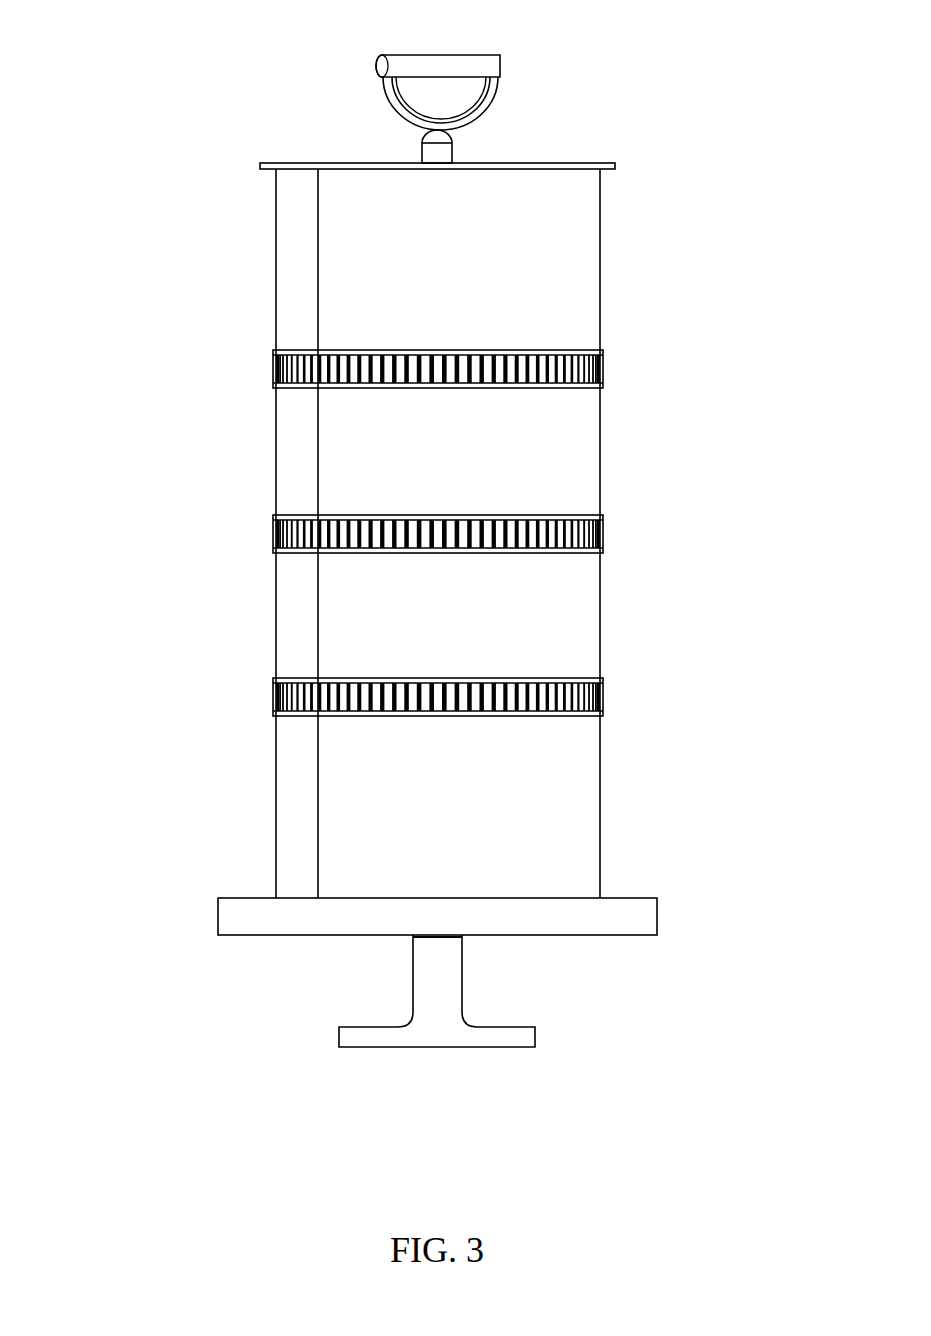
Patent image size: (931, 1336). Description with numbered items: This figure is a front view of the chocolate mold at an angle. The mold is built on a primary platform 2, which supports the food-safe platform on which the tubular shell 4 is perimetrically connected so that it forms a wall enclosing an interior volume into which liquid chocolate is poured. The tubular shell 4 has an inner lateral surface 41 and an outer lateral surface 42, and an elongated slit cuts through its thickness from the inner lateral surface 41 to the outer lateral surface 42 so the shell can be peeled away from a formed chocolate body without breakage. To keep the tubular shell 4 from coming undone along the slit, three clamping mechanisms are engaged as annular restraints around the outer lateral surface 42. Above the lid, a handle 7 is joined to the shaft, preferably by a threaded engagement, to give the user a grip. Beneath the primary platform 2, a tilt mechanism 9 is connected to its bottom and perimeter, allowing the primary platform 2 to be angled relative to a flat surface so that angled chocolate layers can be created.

The primary platform 2 is at (243, 913).
The tubular shell 4 is at (178, 602).
The handle 7 is at (480, 64).
The tilt mechanism 9 is at (452, 988).
The inner lateral surface 41 is at (318, 805).
The outer lateral surface 42 is at (290, 260).